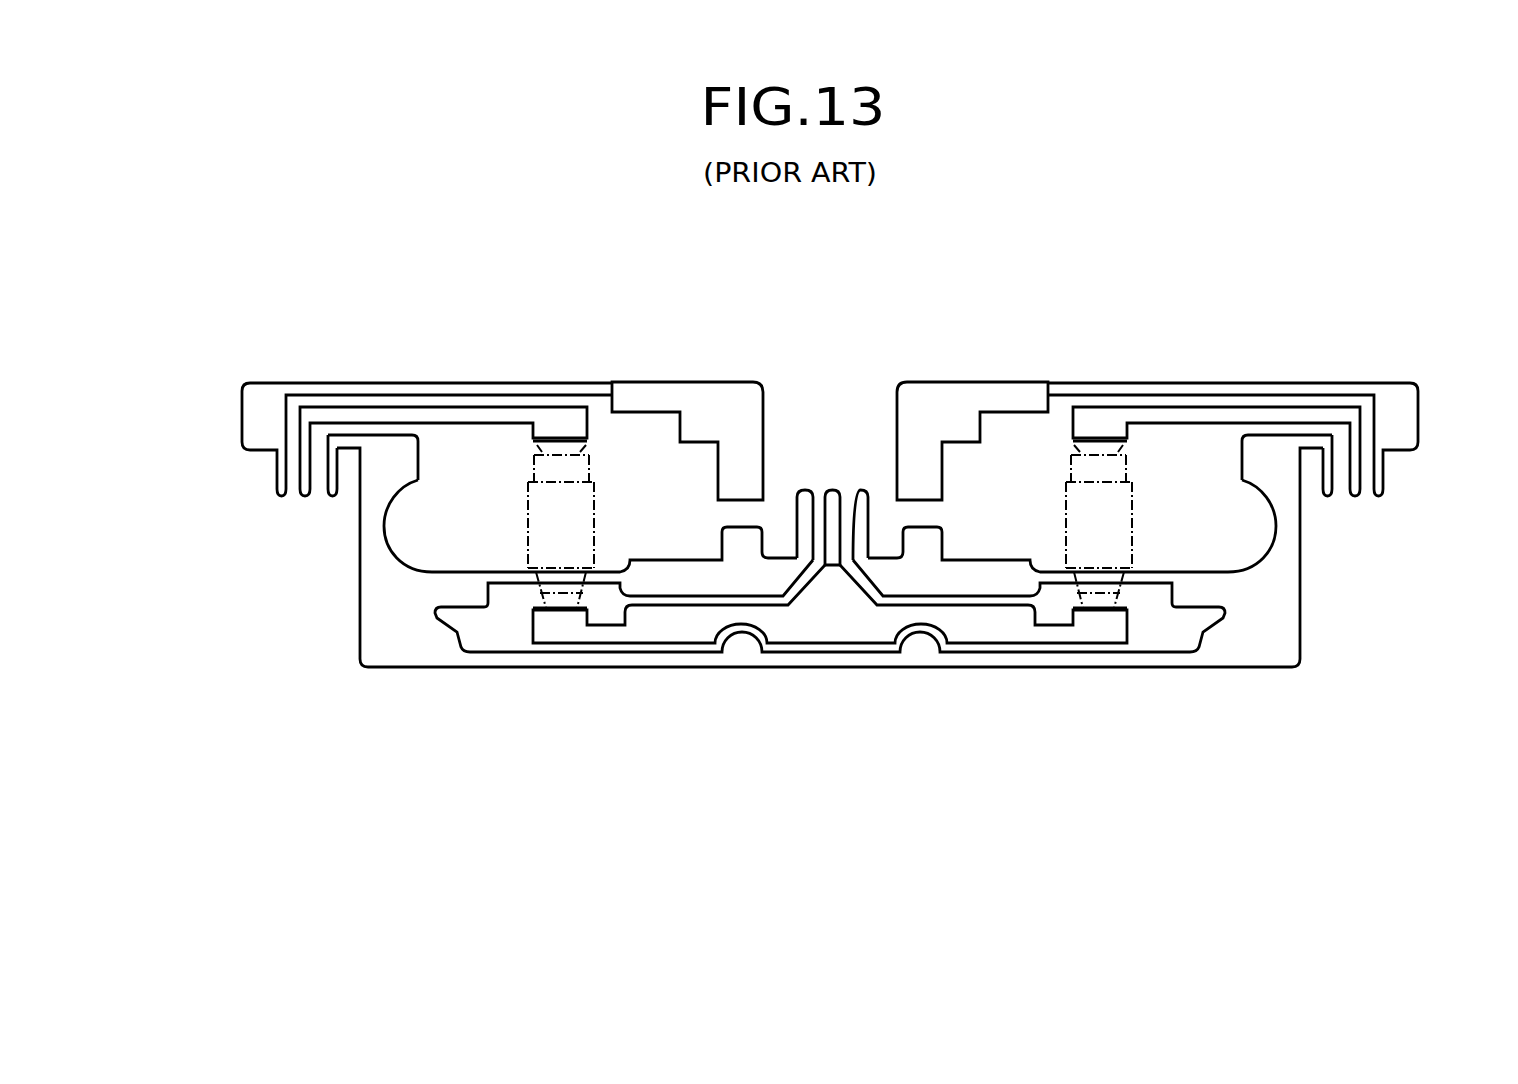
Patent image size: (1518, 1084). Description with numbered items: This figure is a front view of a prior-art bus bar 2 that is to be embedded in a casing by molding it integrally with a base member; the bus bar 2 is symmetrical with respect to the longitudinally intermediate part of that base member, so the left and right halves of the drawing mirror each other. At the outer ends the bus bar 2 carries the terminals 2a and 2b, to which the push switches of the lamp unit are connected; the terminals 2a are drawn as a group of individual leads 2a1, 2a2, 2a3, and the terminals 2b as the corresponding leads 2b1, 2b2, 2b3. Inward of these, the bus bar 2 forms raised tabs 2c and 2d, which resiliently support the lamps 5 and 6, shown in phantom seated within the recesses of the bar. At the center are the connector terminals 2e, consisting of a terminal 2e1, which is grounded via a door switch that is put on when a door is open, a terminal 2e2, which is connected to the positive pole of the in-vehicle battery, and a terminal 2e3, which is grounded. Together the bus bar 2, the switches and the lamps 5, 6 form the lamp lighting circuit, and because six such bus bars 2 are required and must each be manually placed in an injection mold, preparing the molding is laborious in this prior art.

The bus bar 2 is at (833, 680).
The terminal 2a is at (1271, 524).
The first terminal 2a1 is at (1355, 496).
The second terminal 2a2 is at (1336, 515).
The third terminal 2a3 is at (1381, 496).
The terminal 2b is at (383, 513).
The first terminal 2b1 is at (305, 496).
The second terminal 2b2 is at (313, 511).
The third terminal 2b3 is at (279, 495).
The raised tab 2c is at (1080, 605).
The raised tab 2d is at (543, 608).
The connector terminals 2e is at (835, 408).
The terminal 2e1 is at (806, 490).
The terminal 2e2 is at (833, 490).
The terminal 2e3 is at (861, 490).
The lamp 5 is at (1126, 503).
The lamp 6 is at (579, 516).